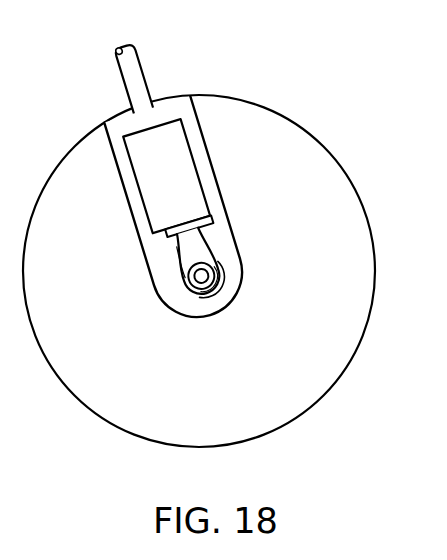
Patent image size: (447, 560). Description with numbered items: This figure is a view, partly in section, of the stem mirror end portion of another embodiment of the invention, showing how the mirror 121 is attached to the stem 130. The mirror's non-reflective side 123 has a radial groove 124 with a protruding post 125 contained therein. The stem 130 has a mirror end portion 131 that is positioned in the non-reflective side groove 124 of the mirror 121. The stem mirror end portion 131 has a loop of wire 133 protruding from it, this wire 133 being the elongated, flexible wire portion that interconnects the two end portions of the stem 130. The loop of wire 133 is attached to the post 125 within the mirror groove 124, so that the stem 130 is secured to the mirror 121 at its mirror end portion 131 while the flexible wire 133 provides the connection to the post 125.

The mirror 121 is at (80, 402).
The non-reflective side 123 is at (223, 380).
The radial groove 124 is at (223, 245).
The protruding post 125 is at (222, 278).
The stem 130 is at (145, 77).
The mirror end portion 131 is at (197, 187).
The wire portion 133 is at (180, 258).